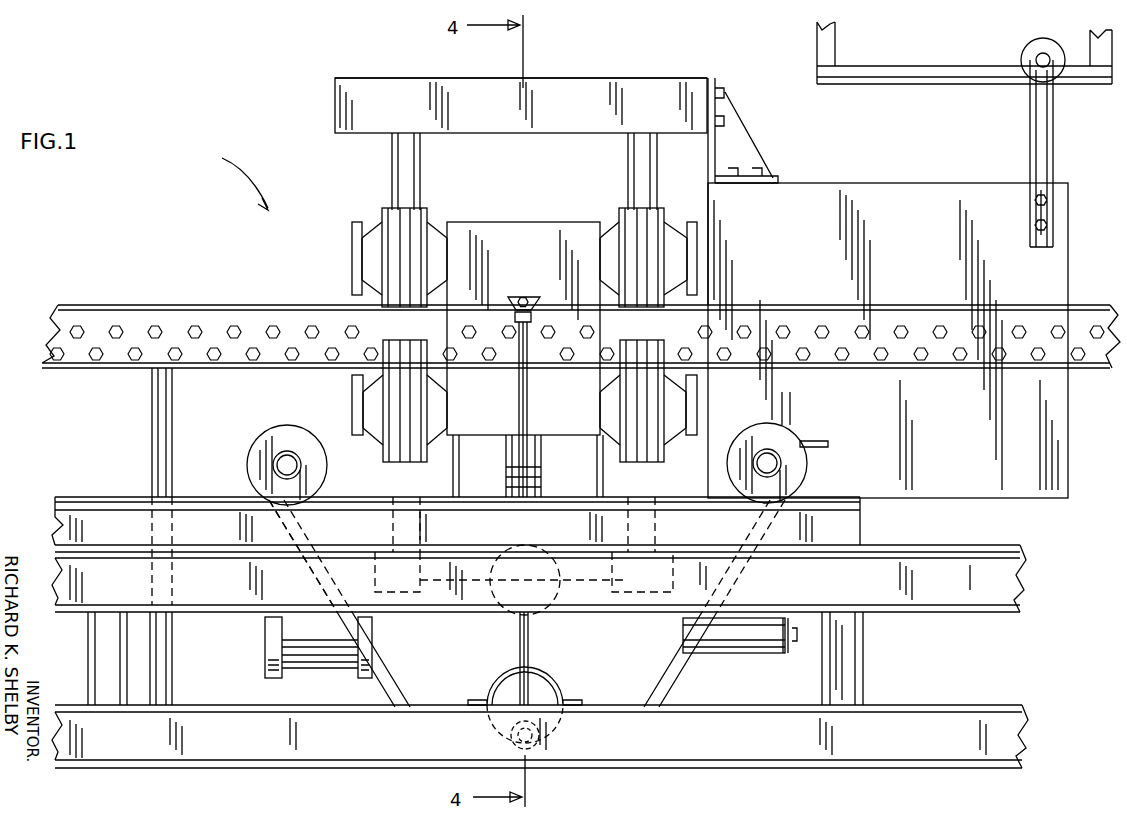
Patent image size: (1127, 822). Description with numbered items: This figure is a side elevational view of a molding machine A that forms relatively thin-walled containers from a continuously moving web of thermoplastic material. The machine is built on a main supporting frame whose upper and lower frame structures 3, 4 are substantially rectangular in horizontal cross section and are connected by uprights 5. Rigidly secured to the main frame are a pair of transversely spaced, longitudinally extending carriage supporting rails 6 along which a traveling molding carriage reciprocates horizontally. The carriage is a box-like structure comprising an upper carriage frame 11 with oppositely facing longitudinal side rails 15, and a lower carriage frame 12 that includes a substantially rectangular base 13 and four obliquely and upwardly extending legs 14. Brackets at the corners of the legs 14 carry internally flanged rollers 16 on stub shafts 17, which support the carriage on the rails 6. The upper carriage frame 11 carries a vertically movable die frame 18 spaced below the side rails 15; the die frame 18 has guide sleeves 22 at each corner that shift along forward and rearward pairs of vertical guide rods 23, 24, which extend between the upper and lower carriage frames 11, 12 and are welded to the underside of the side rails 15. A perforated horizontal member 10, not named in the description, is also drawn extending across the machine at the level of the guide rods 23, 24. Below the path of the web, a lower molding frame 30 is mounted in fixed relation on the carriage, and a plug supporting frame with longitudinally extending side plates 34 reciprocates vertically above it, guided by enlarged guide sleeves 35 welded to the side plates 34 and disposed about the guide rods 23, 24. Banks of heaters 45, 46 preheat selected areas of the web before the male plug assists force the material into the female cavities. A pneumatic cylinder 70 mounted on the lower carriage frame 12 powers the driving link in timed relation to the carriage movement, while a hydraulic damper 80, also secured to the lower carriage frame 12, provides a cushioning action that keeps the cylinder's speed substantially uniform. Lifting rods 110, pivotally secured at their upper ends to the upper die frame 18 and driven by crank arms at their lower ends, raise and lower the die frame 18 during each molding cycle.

The molding machine A is at (236, 180).
The upper frame structure 3 is at (930, 618).
The lower frame structure 4 is at (876, 770).
The uprights 5 is at (863, 670).
The carriage supporting rails 6 is at (860, 530).
The perforated mounting plate 10 is at (240, 378).
The upper carriage frame 11 is at (327, 75).
The lower carriage frame 12 is at (382, 697).
The base 13 is at (658, 694).
The legs 14 is at (365, 497).
The side rails 15 is at (600, 82).
The internally flanged rollers 16 is at (270, 430).
The stub shafts 17 is at (285, 463).
The die frame 18 is at (535, 232).
The guide sleeves 22 is at (382, 272).
The forward guide rods 23 is at (421, 165).
The rearward guide rods 24 is at (628, 165).
The lower molding frame 30 is at (355, 400).
The side plates 34 is at (506, 428).
The enlarged guide sleeves 35 is at (416, 444).
The bank of heaters 45 is at (1078, 223).
The bank of heaters 46 is at (1077, 418).
The pneumatic cylinder 70 is at (265, 667).
The hydraulic damper 80 is at (742, 655).
The lifting rods 110 is at (520, 655).